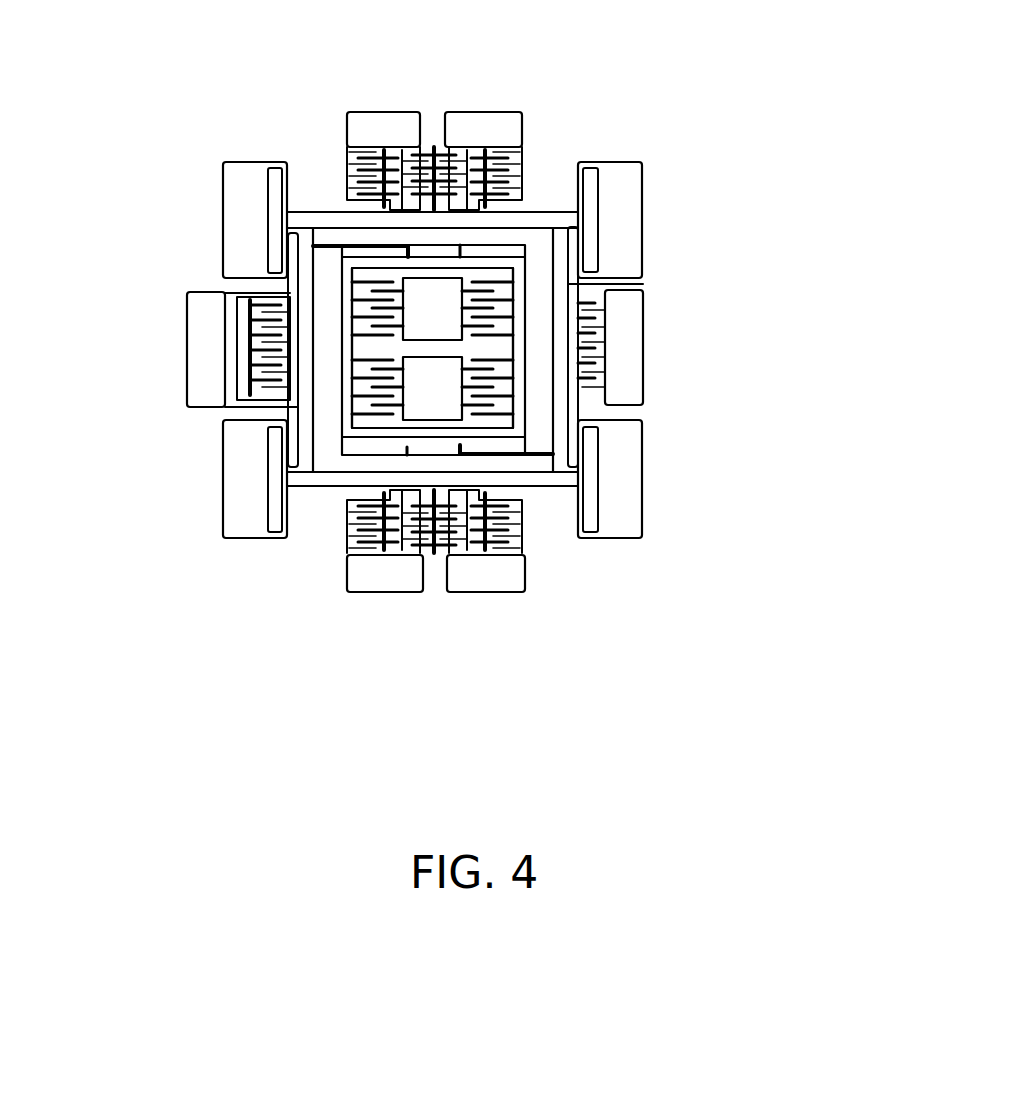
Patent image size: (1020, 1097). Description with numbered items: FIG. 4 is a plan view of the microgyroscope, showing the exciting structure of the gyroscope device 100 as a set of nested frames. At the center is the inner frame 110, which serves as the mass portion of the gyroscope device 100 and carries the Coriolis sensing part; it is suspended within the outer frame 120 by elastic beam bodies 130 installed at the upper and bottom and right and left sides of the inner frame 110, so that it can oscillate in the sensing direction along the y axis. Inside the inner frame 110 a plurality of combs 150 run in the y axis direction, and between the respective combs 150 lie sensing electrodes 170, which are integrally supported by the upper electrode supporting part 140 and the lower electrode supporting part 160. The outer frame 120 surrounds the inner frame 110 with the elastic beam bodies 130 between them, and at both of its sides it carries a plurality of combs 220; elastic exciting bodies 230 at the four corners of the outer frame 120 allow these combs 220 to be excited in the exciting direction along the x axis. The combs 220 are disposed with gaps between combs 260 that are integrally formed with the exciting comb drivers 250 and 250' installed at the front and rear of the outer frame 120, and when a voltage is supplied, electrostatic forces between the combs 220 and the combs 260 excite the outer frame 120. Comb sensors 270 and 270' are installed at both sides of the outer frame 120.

The gyroscope device 100 is at (678, 108).
The inner frame 110 is at (350, 397).
The outer frame 120 is at (562, 293).
The elastic beam bodies 130 is at (353, 247).
The upper electrode supporting part 140 is at (447, 285).
The combs 150 is at (500, 287).
The lower electrode supporting part 160 is at (422, 410).
The sensing electrodes 170 is at (507, 412).
The combs 220 is at (420, 548).
The elastic exciting bodies 230 is at (633, 188).
The exciting comb driver 250 is at (340, 345).
The exciting comb driver 250' is at (515, 352).
The combs 260 is at (453, 548).
The comb sensor 270 is at (172, 349).
The comb sensor 270' is at (703, 344).